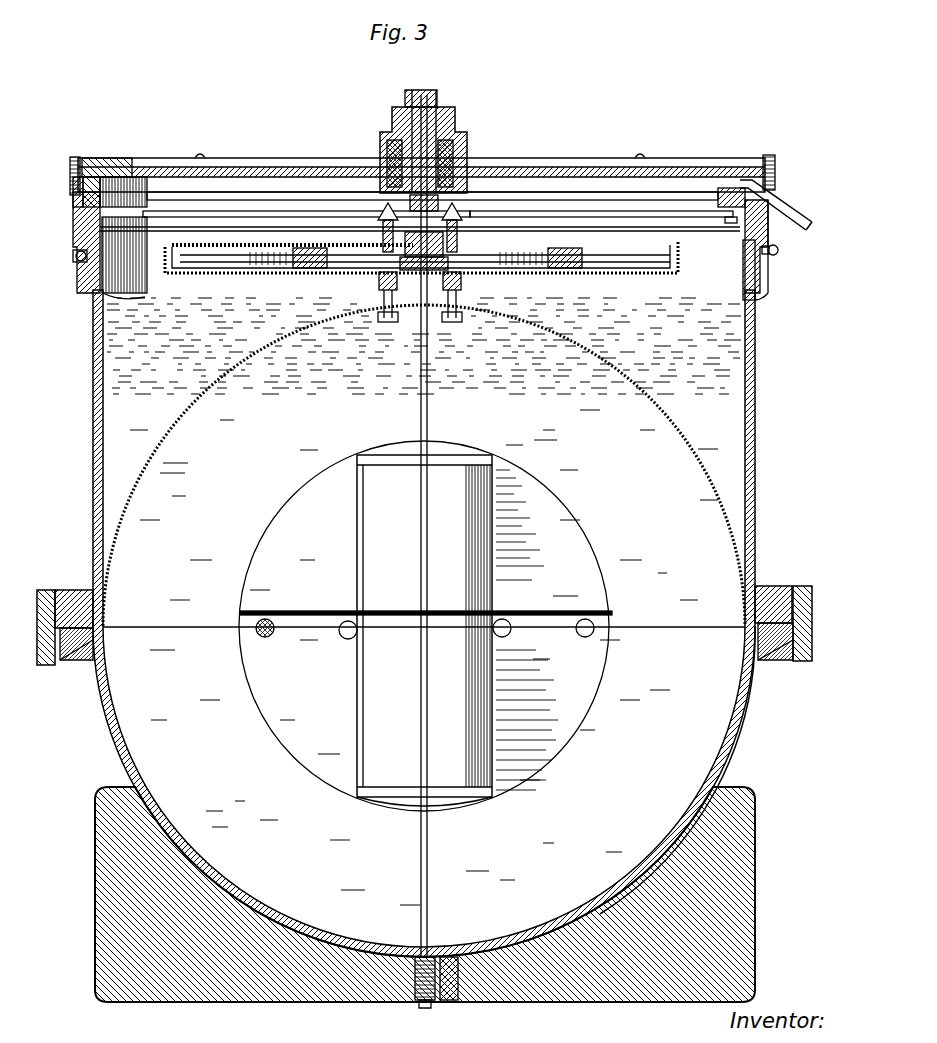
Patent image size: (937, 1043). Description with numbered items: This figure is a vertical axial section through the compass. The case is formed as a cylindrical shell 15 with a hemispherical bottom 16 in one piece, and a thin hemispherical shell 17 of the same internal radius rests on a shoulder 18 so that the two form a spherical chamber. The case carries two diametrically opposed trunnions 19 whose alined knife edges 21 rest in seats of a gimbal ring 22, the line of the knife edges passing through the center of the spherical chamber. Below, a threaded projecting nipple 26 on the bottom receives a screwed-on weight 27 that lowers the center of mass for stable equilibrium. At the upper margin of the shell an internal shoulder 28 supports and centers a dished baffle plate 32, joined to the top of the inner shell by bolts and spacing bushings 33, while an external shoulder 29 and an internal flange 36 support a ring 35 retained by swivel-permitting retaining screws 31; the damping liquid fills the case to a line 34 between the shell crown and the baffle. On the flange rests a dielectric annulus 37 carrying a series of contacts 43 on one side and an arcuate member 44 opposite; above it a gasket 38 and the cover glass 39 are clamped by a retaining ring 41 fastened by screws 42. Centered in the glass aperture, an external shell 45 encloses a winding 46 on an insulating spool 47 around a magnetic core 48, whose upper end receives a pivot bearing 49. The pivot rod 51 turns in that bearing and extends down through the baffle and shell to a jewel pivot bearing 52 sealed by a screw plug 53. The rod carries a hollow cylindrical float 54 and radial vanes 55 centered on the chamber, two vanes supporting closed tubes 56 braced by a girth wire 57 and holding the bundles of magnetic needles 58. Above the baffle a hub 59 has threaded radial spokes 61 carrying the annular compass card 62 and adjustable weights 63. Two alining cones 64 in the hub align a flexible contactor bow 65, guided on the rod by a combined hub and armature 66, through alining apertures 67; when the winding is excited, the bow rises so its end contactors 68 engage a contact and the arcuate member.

The cylindrical shell 15 is at (757, 440).
The hemispherical bottom 16 is at (740, 745).
The hemispherical shell 17 is at (672, 418).
The shoulder 18 is at (740, 627).
The trunnions 19 is at (75, 590).
The knife edges 21 is at (70, 660).
The gimbal ring 22 is at (44, 665).
The threaded projecting nipple 26 is at (445, 1002).
The weight 27 is at (180, 1002).
The internal shoulder 28 is at (745, 270).
The external shoulder 29 is at (770, 272).
The retaining screws 31 is at (75, 264).
The dished baffle plate 32 is at (650, 272).
The bolts and spacing bushings 33 is at (383, 300).
The liquid line 34 is at (100, 296).
The ring 35 is at (775, 200).
The internal flange 36 is at (80, 218).
The annulus 37 is at (660, 192).
The gasket 38 is at (73, 190).
The cover glass 39 is at (272, 166).
The retaining ring 41 is at (115, 160).
The screws 42 is at (77, 156).
The contacts 43 is at (700, 188).
The arcuate member 44 is at (165, 212).
The external shell 45 is at (468, 137).
The winding 46 is at (455, 140).
The insulating spool 47 is at (450, 125).
The magnetic core 48 is at (432, 92).
The pivot bearing 49 is at (411, 92).
The pivot rod 51 is at (430, 870).
The jewel pivot bearing 52 is at (415, 950).
The screw plug 53 is at (418, 1005).
The hollow cylindrical float 54 is at (382, 793).
The radial vanes 55 is at (290, 752).
The tubes 56 is at (260, 638).
The girth wire 57 is at (320, 618).
The magnetic needles 58 is at (266, 618).
The hub 59 is at (455, 243).
The radial spokes 61 is at (340, 250).
The annular compass card 62 is at (235, 245).
The adjustable weight 63 is at (310, 250).
The alining cones 64 is at (380, 225).
The contactor bow 65 is at (572, 211).
The combined hub and armature 66 is at (440, 205).
The alining apertures 67 is at (395, 212).
The contactors 68 is at (72, 256).